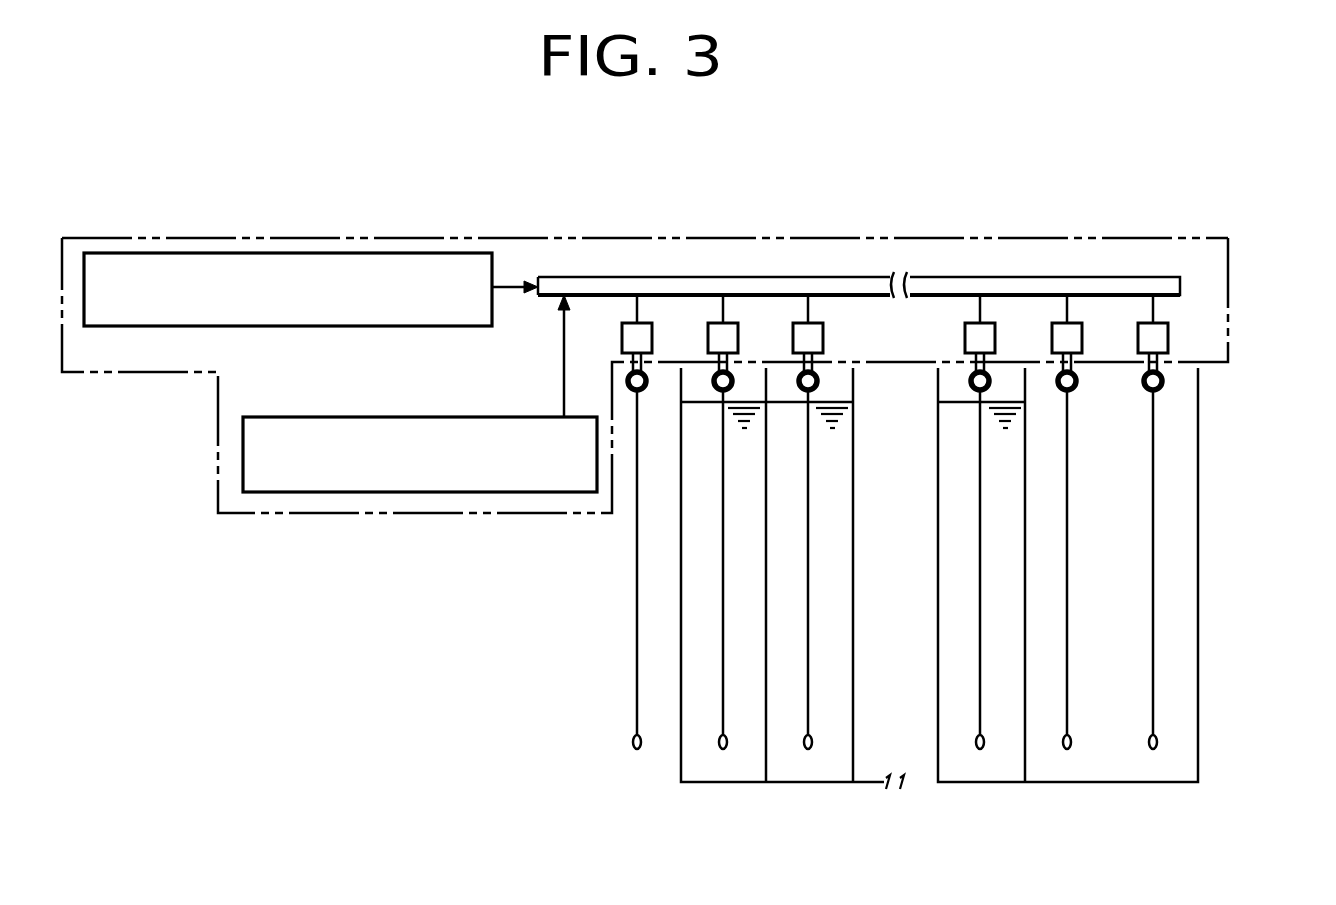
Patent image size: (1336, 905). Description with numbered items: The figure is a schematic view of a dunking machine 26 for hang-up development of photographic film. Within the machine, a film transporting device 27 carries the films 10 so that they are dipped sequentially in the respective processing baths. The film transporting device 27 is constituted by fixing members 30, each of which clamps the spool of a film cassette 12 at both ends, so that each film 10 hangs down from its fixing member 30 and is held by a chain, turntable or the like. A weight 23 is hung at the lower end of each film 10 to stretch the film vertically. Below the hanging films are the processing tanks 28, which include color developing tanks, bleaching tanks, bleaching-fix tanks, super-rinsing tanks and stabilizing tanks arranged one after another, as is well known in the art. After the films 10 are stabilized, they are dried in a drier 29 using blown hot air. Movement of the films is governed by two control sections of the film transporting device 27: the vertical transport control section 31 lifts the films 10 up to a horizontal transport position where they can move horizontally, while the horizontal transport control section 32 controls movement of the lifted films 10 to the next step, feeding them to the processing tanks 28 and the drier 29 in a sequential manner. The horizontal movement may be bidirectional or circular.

The film 10 is at (1158, 478).
The film cassette 12 is at (1165, 384).
The weight 23 is at (640, 748).
The dunking machine 26 is at (1236, 318).
The film transporting device 27 is at (540, 236).
The processing tanks 28 is at (744, 775).
The drier 29 is at (1083, 773).
The fixing members 30 is at (622, 340).
The vertical transport control section 31 is at (377, 417).
The horizontal transport control section 32 is at (363, 253).